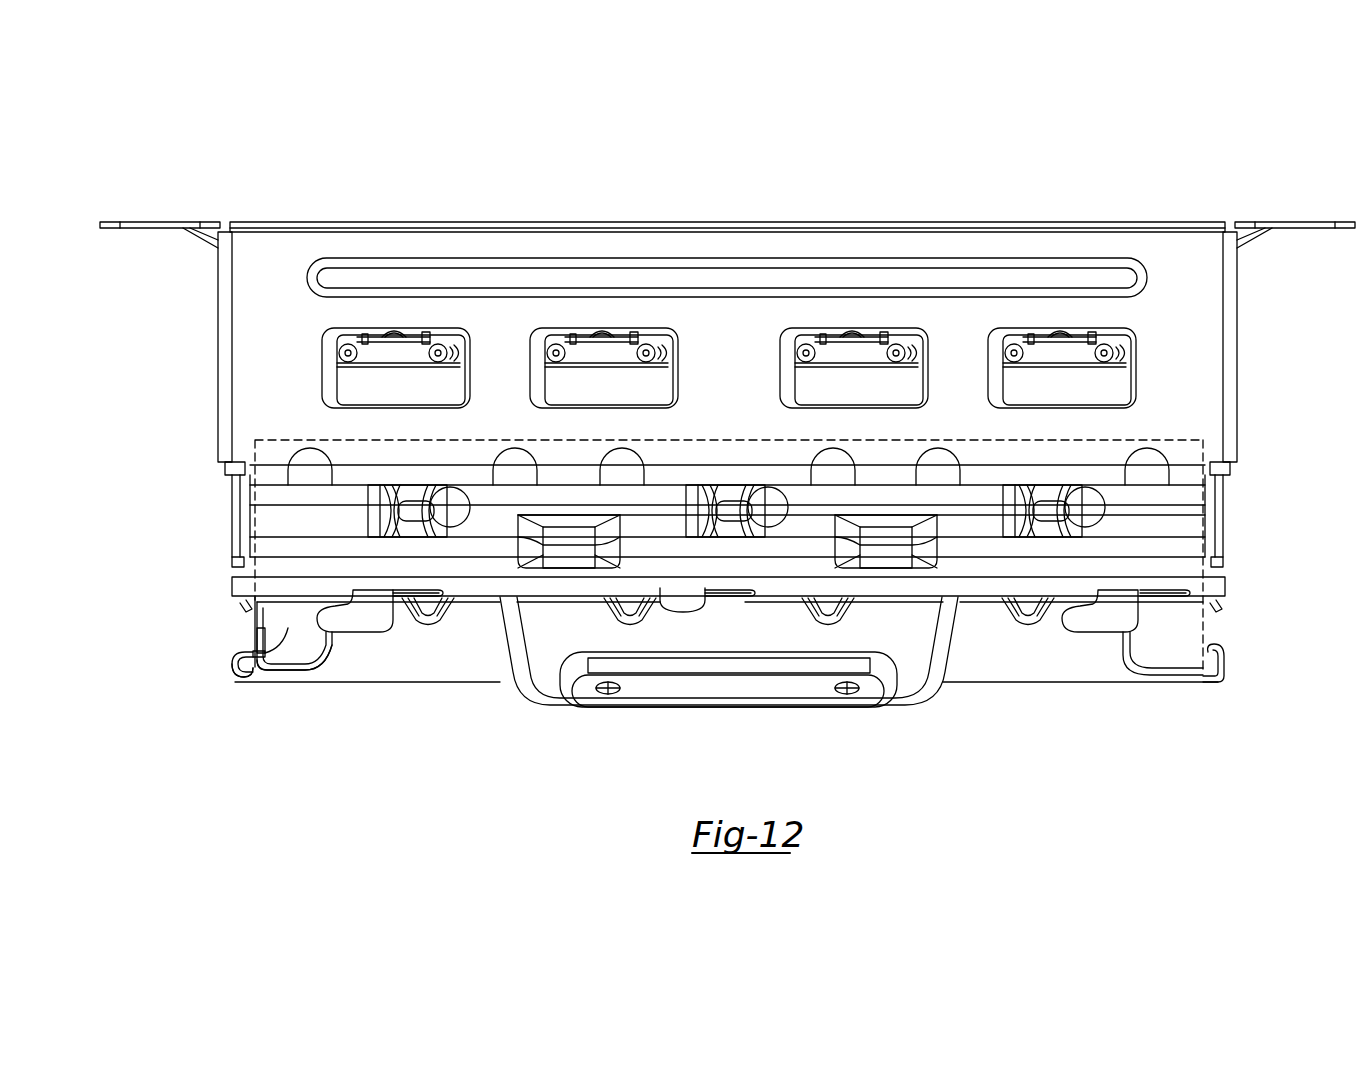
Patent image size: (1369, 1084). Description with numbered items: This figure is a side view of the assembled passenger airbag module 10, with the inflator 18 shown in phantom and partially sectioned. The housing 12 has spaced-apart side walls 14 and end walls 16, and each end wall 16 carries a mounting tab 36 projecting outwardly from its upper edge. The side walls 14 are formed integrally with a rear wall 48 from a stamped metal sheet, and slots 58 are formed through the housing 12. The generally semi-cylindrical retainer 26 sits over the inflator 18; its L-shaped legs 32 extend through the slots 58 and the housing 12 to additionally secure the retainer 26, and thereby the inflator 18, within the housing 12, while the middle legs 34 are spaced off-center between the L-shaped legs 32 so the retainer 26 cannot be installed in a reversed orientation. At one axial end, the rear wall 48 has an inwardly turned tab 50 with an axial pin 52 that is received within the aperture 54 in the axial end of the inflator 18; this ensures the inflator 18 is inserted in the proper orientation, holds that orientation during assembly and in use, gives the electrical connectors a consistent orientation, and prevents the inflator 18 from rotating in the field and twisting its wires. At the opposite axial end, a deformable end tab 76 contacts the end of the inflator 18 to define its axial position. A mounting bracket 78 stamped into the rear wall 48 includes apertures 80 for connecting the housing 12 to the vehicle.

The passenger airbag module 10 is at (298, 172).
The housing 12 is at (389, 686).
The side walls 14 is at (1195, 393).
The end walls 16 is at (158, 216).
The inflator 18 is at (248, 632).
The retainer 26 is at (352, 636).
The L-shaped legs 32 is at (382, 633).
The middle legs 34 is at (684, 612).
The mounting tab 36 is at (112, 222).
The rear wall 48 is at (300, 684).
The inwardly turned tab 50 is at (236, 662).
The axial pin 52 is at (279, 640).
The aperture 54 is at (243, 678).
The slots 58 is at (445, 604).
The deformable end tab 76 is at (1225, 646).
The mounting bracket 78 is at (597, 697).
The apertures 80 is at (845, 698).